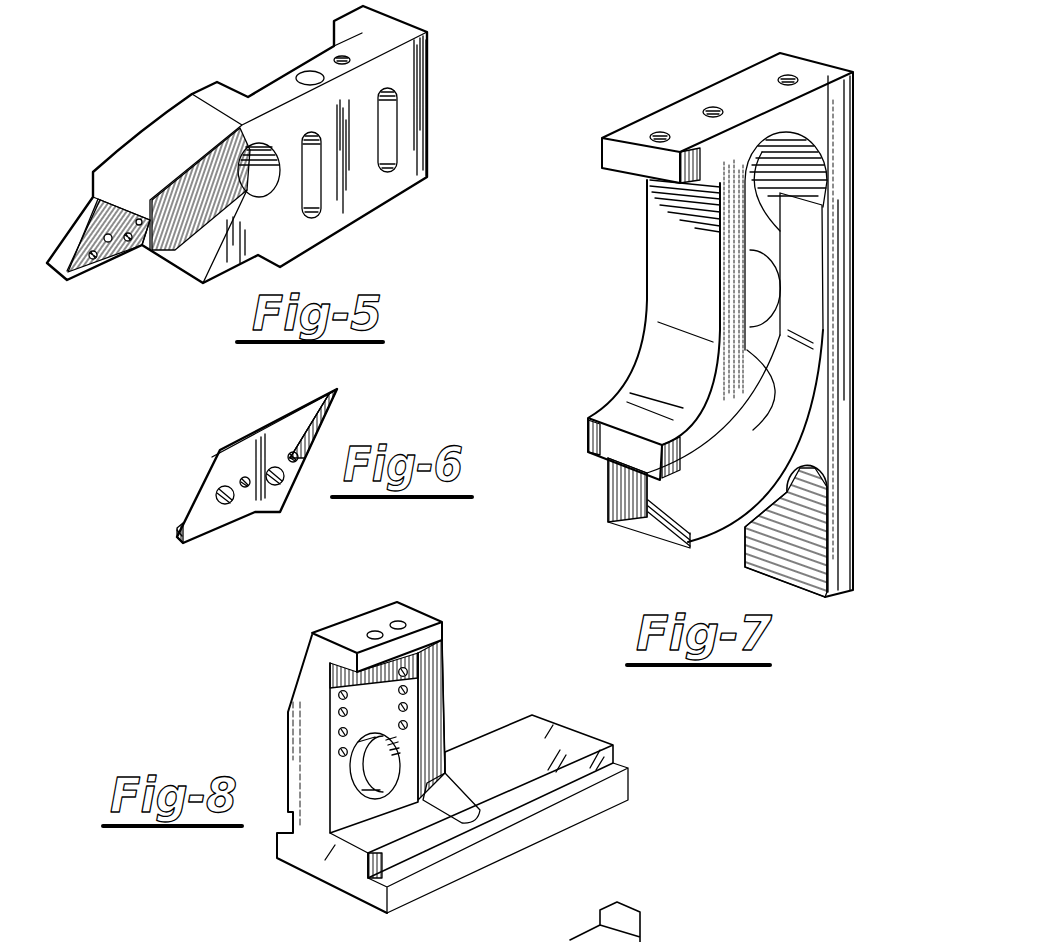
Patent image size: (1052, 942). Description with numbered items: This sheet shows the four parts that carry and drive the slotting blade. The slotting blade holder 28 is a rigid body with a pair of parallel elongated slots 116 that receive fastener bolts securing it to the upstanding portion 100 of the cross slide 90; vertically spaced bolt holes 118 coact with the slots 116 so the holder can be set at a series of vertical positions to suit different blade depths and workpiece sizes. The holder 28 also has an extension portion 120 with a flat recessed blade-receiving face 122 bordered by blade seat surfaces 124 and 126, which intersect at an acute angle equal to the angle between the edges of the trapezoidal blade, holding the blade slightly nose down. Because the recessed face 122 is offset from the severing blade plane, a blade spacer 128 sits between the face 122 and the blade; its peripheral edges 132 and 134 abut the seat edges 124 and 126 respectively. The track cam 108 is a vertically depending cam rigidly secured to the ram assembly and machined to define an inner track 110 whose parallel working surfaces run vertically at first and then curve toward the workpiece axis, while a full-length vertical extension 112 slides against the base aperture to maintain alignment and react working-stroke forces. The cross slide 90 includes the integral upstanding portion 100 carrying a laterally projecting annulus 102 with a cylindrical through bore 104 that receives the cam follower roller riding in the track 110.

In FIG. 5, the slotting blade holder 28 is at (212, 97).
In FIG. 5, the extension portion 120 is at (73, 233).
In FIG. 5, the blade-receiving face 122 is at (115, 262).
In FIG. 5, the blade seat surface 124 is at (157, 249).
In FIG. 5, the blade seat surface 126 is at (200, 254).
In FIG. 5, the elongated slots 116 is at (313, 194).
In FIG. 6, the blade spacer 128 is at (238, 458).
In FIG. 6, the peripheral edge 132 is at (322, 388).
In FIG. 6, the peripheral edge 134 is at (323, 442).
In FIG. 7, the track cam 108 is at (663, 270).
In FIG. 7, the inner track 110 is at (804, 276).
In FIG. 7, the vertical extension 112 is at (840, 537).
In FIG. 8, the upstanding portion 100 is at (310, 657).
In FIG. 8, the bolt holes 118 is at (338, 752).
In FIG. 8, the annulus 102 is at (285, 765).
In FIG. 8, the through bore 104 is at (372, 797).
In FIG. 8, the cross slide 90 is at (505, 740).